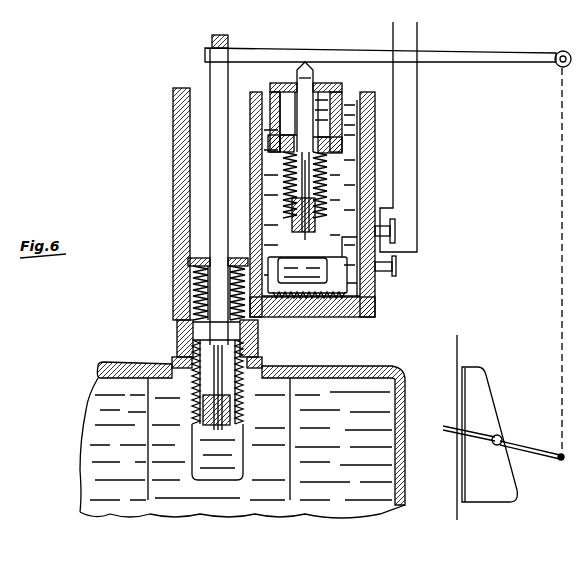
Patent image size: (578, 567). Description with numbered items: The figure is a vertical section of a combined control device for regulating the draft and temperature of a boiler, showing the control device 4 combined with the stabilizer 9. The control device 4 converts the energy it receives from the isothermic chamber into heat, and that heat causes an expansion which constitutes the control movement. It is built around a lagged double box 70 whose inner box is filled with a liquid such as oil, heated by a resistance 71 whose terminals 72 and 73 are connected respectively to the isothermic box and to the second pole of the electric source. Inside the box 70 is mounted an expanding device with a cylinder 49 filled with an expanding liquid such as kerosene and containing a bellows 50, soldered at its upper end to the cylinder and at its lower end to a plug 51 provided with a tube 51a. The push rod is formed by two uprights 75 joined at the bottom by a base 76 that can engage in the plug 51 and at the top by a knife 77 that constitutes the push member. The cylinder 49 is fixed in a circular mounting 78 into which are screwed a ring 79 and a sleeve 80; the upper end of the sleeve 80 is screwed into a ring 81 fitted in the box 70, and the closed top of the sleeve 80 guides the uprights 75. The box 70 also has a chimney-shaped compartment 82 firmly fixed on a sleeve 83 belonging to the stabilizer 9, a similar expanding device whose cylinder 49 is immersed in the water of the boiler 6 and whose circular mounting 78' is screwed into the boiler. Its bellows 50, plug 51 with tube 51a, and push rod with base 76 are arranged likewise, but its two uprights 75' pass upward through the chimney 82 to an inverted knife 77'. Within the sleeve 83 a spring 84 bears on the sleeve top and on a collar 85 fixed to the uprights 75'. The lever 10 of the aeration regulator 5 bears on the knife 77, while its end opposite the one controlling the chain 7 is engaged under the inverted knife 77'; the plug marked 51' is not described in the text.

The control device 4 is at (382, 133).
The aeration regulator 5 is at (522, 449).
The boiler 6 is at (405, 406).
The chain 7 is at (558, 237).
The stabilizer 9 is at (172, 458).
The lever 10 is at (340, 55).
The cylinder 49 is at (243, 458).
The bellows 50 is at (328, 187).
The plug 51 is at (286, 343).
The cup 51' is at (337, 170).
The tube 51a is at (214, 385).
The lagged double box 70 is at (360, 165).
The resistance 71 is at (376, 305).
The terminal 72 is at (390, 226).
The terminal 73 is at (393, 272).
The uprights 75 is at (314, 151).
The uprights 75' is at (184, 239).
The base 76 is at (292, 210).
The knife 77 is at (321, 71).
The inverted knife 77' is at (237, 36).
The circular mounting 78 is at (340, 147).
The circular mounting 78' is at (202, 354).
The ring 79 is at (177, 333).
The sleeve 80 is at (331, 129).
The ring 81 is at (343, 90).
The compartment 82 is at (187, 207).
The sleeve 83 is at (186, 270).
The spring 84 is at (190, 303).
The collar 85 is at (258, 338).